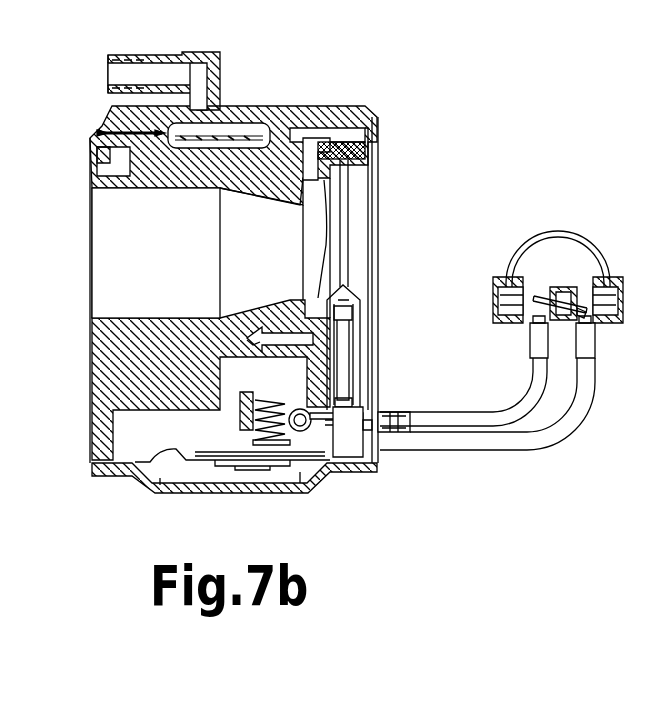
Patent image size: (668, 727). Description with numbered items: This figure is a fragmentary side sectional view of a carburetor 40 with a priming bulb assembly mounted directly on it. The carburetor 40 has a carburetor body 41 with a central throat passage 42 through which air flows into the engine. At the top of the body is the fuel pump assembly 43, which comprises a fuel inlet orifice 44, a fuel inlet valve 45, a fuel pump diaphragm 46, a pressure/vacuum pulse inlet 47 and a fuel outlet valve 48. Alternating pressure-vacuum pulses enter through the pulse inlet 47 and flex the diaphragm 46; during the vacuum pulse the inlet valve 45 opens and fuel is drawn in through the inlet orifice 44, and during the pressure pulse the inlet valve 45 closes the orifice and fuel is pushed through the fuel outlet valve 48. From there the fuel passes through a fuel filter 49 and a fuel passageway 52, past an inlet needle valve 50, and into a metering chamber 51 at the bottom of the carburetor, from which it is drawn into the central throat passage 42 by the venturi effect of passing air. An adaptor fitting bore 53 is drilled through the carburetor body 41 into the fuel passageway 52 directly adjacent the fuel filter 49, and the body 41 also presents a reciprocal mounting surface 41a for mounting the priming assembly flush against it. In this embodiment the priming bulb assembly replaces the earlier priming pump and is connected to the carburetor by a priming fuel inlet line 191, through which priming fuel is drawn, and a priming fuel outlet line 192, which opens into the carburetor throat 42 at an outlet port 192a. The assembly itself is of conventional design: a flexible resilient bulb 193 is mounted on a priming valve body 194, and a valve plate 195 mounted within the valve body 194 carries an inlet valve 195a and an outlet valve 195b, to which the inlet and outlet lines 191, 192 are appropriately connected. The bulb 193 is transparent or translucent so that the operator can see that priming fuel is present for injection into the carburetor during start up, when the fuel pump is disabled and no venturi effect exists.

The carburetor 40 is at (203, 299).
The carburetor body 41 is at (391, 290).
The reciprocal mounting surface 41a is at (393, 287).
The central throat passage 42 is at (138, 253).
The fuel pump assembly 43 is at (224, 211).
The fuel inlet orifice 44 is at (92, 163).
The fuel inlet valve 45 is at (115, 120).
The fuel pump diaphragm 46 is at (219, 111).
The pressure/vacuum pulse inlet 47 is at (164, 67).
The fuel outlet valve 48 is at (325, 127).
The fuel filter 49 is at (341, 116).
The inlet needle valve 50 is at (370, 285).
The metering chamber 51 is at (232, 486).
The fuel passageway 52 is at (361, 113).
The adaptor fitting bore 53 is at (299, 248).
The priming fuel inlet line 191 is at (462, 395).
The priming fuel outlet line 192 is at (487, 419).
The outlet port 192a is at (270, 302).
The flexible resilient bulb 193 is at (558, 242).
The priming valve body 194 is at (512, 299).
The valve plate 195 is at (540, 317).
The inlet valve 195a is at (585, 260).
The outlet valve 195b is at (620, 281).